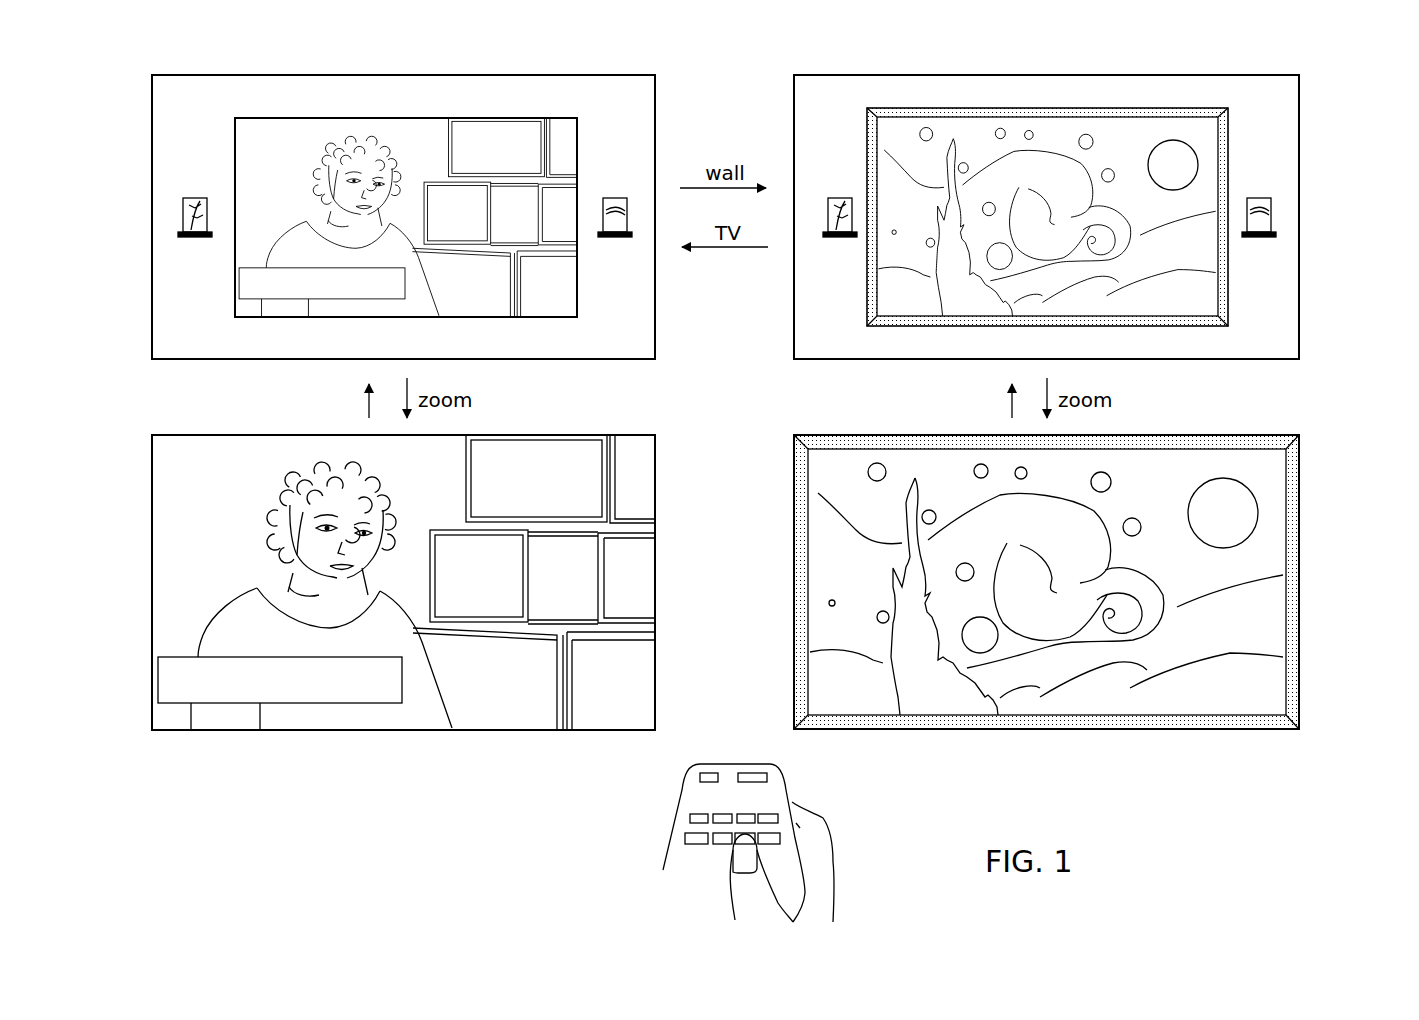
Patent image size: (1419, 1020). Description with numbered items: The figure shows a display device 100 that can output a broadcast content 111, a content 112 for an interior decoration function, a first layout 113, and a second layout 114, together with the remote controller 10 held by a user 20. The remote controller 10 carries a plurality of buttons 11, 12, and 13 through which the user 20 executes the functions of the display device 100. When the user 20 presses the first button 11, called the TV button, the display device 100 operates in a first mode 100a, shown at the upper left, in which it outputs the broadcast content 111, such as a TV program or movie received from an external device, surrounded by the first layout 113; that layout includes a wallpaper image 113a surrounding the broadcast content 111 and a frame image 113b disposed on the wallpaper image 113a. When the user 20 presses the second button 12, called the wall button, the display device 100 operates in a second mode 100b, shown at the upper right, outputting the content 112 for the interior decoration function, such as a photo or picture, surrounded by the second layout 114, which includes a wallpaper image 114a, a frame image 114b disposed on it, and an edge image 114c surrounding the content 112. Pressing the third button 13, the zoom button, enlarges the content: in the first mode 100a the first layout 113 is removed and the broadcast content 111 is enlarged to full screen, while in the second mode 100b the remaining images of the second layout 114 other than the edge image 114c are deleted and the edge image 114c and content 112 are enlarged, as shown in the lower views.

The display device 100 is at (540, 360).
The first mode 100a is at (487, 66).
The second mode 100b is at (1127, 66).
The broadcast content 111 is at (248, 310).
The content for interior decoration function 112 is at (1195, 155).
The first layout 113 is at (365, 262).
The wallpaper image 113a is at (187, 155).
The frame image 113b is at (405, 217).
The second layout 114 is at (1055, 381).
The wallpaper image 114a is at (1282, 287).
The frame image 114b is at (1272, 220).
The edge image 114c is at (878, 107).
The remote controller 10 is at (733, 820).
The first button 11 is at (692, 816).
The second button 12 is at (722, 813).
The third button 13 is at (748, 812).
The user 20 is at (820, 857).